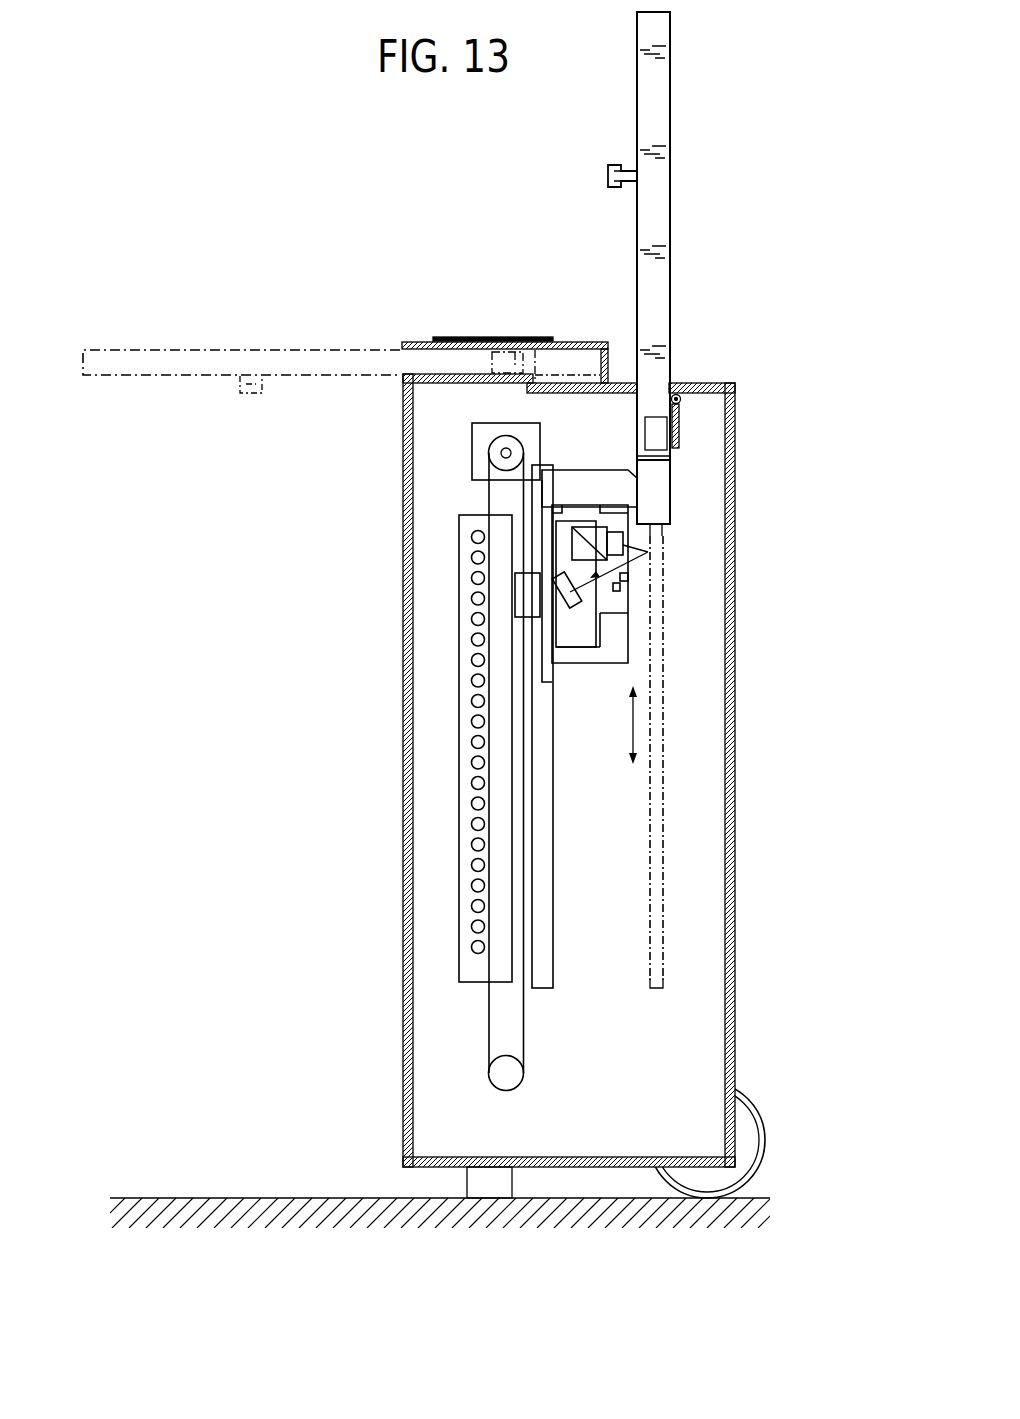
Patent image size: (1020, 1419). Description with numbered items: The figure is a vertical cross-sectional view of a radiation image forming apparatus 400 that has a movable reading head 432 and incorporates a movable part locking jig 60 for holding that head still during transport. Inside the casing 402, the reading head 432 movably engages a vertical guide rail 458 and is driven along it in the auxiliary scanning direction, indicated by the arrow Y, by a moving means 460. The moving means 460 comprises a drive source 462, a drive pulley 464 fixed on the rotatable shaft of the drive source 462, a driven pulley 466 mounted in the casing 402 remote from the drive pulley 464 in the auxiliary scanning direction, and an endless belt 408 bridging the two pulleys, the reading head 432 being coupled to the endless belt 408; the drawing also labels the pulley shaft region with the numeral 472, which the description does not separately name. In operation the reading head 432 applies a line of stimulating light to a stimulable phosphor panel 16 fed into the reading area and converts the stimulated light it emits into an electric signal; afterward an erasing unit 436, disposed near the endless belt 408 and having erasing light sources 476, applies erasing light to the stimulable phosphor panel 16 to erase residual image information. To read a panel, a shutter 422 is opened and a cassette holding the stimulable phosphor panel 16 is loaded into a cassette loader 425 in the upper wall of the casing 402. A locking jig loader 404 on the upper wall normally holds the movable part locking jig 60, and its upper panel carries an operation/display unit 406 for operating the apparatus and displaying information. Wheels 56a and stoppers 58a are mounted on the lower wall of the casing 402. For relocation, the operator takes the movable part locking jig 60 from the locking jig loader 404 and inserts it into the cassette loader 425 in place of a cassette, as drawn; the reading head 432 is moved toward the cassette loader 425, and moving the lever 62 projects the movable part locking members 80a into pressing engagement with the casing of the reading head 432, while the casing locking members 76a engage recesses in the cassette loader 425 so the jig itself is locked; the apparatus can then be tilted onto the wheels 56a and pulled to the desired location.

The radiation image forming apparatus 400 is at (287, 107).
The casing 402 is at (735, 866).
The locking jig loader 404 is at (388, 331).
The operation/display unit 406 is at (463, 337).
The endless belt 408 is at (489, 1013).
The stimulable phosphor panel 16 is at (663, 584).
The movable part locking jig 60 is at (642, 92).
The lever 62 is at (606, 176).
The casing locking member 76a is at (510, 352).
The movable part locking member 80a is at (645, 493).
The shutter 422 is at (680, 422).
The cassette loader 425 is at (688, 402).
The reading head 432 is at (587, 487).
The erasing unit 436 is at (450, 755).
The guide rail 458 is at (545, 946).
The moving means 460 is at (463, 490).
The drive source 462 is at (472, 472).
The drive pulley 464 is at (472, 443).
The driven pulley 466 is at (508, 1076).
The drive pulley 472 is at (500, 451).
The erasing light sources 476 is at (470, 628).
The wheel 56a is at (752, 1137).
The stopper 58a is at (512, 1186).